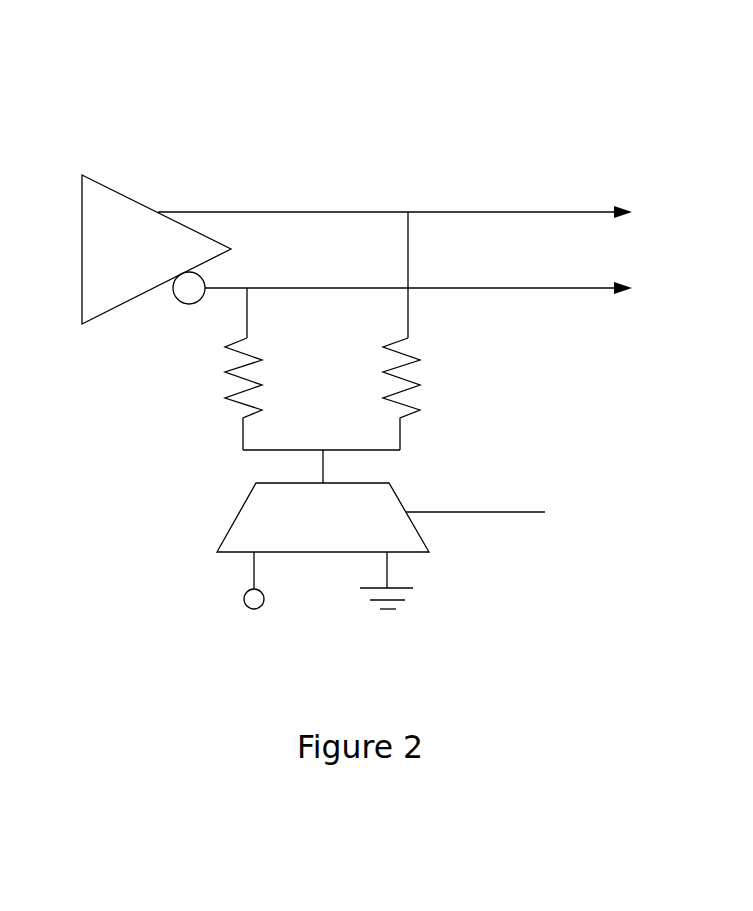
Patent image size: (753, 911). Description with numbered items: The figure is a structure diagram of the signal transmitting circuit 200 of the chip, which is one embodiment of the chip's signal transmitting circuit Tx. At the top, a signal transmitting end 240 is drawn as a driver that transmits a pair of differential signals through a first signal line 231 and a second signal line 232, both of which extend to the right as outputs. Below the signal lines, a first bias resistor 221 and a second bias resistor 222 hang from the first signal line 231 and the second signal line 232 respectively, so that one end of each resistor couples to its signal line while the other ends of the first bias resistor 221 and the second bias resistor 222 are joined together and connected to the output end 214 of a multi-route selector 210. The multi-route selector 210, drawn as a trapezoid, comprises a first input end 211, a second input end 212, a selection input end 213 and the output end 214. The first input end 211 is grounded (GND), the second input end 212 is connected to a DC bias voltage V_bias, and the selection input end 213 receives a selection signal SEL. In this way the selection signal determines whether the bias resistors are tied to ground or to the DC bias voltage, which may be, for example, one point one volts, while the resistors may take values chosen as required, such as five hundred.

The signal transmitting circuit 200 is at (192, 74).
The signal transmitting end 240 is at (156, 249).
The first signal line 231 is at (395, 262).
The second signal line 232 is at (418, 300).
The first bias resistor 221 is at (376, 394).
The second bias resistor 222 is at (218, 394).
The multi-route selector 210 is at (323, 517).
The first input end 211 is at (386, 569).
The second input end 212 is at (257, 569).
The selection input end 213 is at (456, 515).
The output end 214 is at (323, 478).